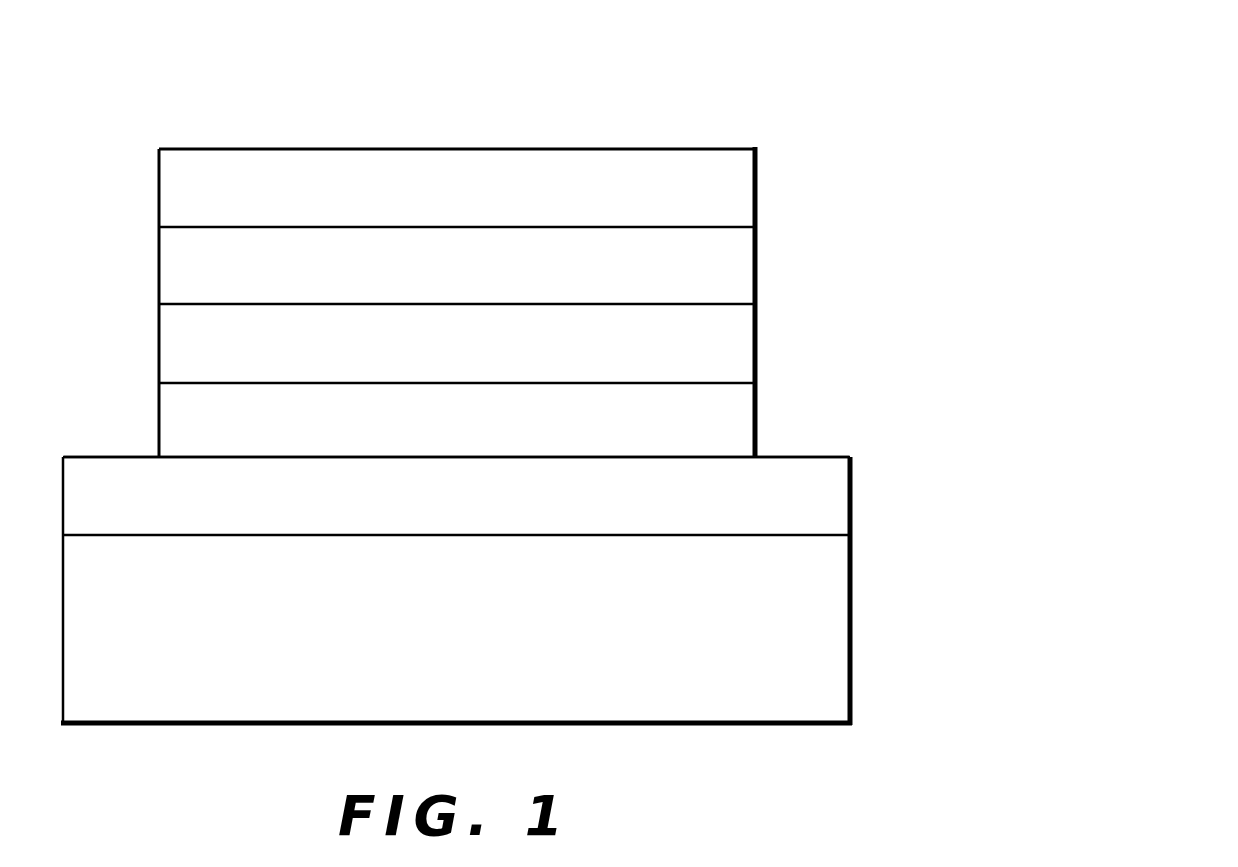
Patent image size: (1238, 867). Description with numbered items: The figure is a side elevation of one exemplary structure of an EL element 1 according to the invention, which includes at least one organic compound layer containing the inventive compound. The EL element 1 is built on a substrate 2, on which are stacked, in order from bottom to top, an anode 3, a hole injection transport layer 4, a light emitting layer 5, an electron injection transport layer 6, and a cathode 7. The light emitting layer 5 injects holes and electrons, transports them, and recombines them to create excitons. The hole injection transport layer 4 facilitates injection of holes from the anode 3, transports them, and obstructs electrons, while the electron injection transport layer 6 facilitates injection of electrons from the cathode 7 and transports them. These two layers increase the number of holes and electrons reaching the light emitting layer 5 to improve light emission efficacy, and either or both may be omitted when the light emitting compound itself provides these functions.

The EL element 1 is at (532, 128).
The substrate 2 is at (840, 625).
The anode 3 is at (840, 518).
The hole injection transport layer 4 is at (748, 428).
The light emitting layer 5 is at (745, 335).
The electron injection transport layer 6 is at (743, 257).
The cathode 7 is at (746, 167).